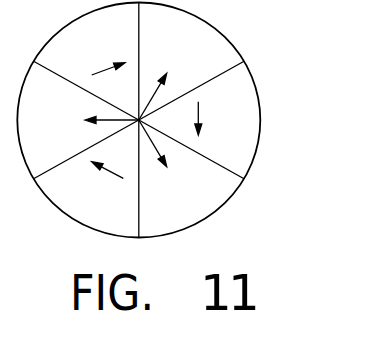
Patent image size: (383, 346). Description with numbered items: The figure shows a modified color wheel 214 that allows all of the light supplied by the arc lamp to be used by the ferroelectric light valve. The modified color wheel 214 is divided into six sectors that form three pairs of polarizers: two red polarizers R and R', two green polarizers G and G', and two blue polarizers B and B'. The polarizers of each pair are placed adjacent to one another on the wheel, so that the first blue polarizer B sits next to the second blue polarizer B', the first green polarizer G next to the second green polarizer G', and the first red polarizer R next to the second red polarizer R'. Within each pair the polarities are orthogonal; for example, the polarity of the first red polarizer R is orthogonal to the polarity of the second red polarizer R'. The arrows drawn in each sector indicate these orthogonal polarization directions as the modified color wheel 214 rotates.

The modified color wheel 214 is at (164, 120).
The first blue polarizer B is at (104, 52).
The second blue polarizer B' is at (173, 76).
The first green polarizer G is at (102, 188).
The second green polarizer G' is at (87, 125).
The first red polarizer R is at (220, 122).
The second red polarizer R' is at (169, 168).